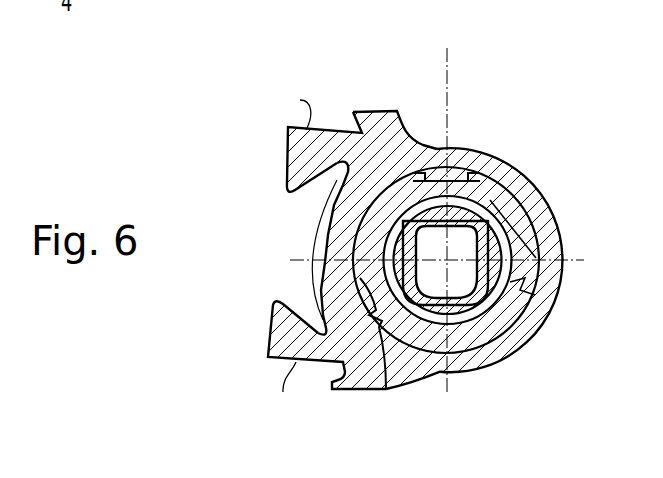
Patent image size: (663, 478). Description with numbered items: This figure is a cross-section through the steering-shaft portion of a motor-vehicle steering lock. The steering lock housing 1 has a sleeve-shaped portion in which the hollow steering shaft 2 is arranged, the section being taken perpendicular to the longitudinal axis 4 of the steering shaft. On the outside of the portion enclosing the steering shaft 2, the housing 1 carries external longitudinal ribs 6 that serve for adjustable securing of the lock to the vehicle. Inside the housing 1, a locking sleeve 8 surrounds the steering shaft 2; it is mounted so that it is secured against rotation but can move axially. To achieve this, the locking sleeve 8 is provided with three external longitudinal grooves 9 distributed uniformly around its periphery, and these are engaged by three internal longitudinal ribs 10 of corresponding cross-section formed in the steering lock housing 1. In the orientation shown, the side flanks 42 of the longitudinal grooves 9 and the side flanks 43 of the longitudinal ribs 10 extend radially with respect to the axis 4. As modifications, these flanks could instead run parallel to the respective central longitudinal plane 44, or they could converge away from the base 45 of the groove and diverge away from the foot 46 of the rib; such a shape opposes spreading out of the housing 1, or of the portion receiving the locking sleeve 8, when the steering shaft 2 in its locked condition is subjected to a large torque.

The steering lock housing 1 is at (338, 220).
The steering shaft 2 is at (478, 214).
The longitudinal axis of the steering shaft 4 is at (460, 318).
The external longitudinal ribs 6 is at (373, 110).
The locking sleeve 8 is at (527, 226).
The external longitudinal grooves 9 is at (522, 311).
The internal longitudinal ribs 10 is at (528, 325).
The side flanks of the longitudinal grooves 42 is at (395, 112).
The side flanks of the longitudinal ribs 43 is at (434, 172).
The central longitudinal plane 44 is at (446, 49).
The base of the groove 45 is at (383, 345).
The foot of the rib 46 is at (363, 294).